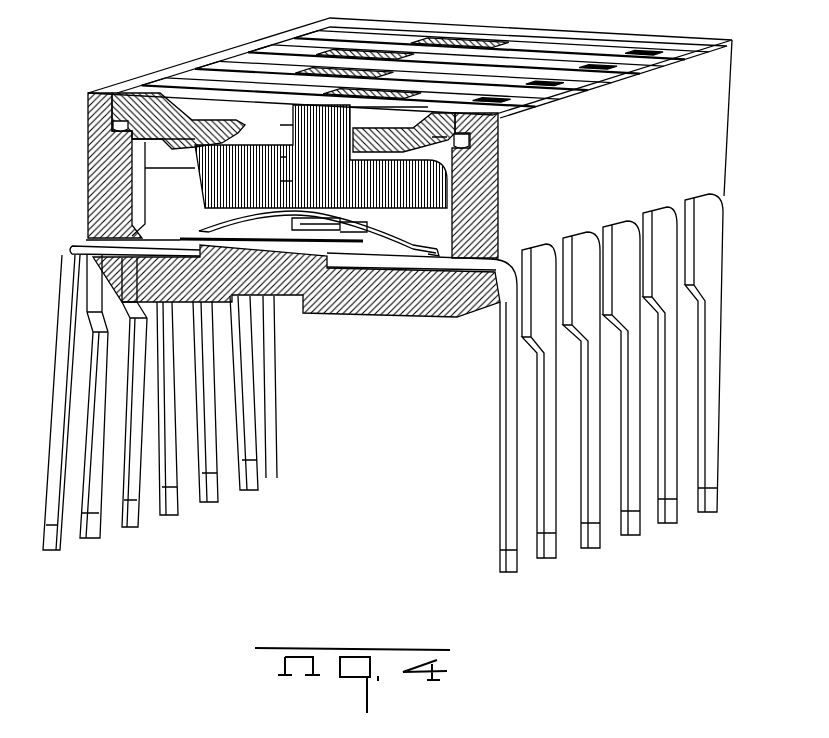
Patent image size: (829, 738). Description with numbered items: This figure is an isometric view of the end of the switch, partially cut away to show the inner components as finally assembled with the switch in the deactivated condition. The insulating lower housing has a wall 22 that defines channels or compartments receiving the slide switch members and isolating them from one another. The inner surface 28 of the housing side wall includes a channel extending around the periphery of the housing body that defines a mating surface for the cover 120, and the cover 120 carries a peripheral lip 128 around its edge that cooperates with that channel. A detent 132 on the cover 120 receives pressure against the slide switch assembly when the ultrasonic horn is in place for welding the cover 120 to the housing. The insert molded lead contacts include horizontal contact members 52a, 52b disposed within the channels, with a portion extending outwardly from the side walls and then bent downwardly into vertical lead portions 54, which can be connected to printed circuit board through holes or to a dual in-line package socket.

The cover 120 is at (193, 72).
The detent 132 is at (160, 100).
The peripheral lip 128 is at (499, 128).
The inner surface of side wall 28 is at (112, 210).
The wall 22 is at (189, 233).
The horizontal contact member 52a is at (110, 247).
The horizontal contact member 52b is at (390, 262).
The vertical lead portion 54 is at (558, 536).